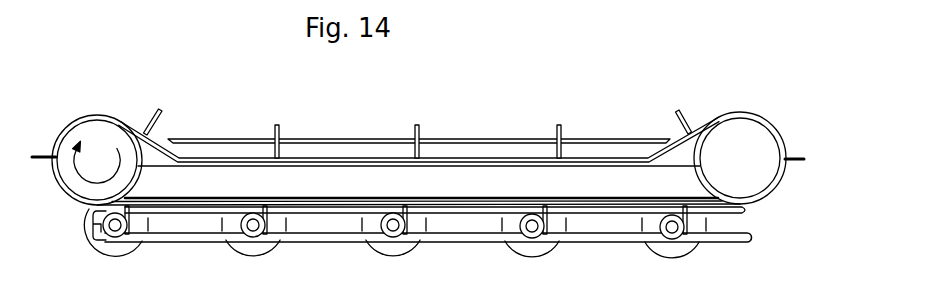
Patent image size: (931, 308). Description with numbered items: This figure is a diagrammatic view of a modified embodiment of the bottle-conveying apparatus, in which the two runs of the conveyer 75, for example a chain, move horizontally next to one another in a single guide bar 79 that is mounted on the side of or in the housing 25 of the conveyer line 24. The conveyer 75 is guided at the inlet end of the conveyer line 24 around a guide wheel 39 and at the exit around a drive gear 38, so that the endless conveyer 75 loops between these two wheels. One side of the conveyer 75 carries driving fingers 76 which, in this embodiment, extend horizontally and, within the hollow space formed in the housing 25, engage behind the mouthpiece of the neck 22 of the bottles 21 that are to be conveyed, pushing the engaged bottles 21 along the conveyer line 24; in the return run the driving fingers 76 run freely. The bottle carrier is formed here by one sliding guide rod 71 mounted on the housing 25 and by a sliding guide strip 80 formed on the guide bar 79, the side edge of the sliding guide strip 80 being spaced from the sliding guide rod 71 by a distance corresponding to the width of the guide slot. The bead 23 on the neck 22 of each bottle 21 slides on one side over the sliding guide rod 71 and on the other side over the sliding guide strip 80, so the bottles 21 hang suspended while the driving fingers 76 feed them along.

The drive gear 38 is at (92, 140).
The guide wheel 39 is at (737, 140).
The conveyer 75 is at (157, 142).
The driving fingers 76 is at (562, 122).
The guide bar 79 is at (493, 185).
The sliding guide strip 80 is at (313, 213).
The sliding guide rod 71 is at (167, 237).
The bottles 21 is at (118, 240).
The neck 22 is at (404, 303).
The bead 23 is at (107, 230).
The conveyer line 24 is at (652, 300).
The housing 25 is at (357, 303).